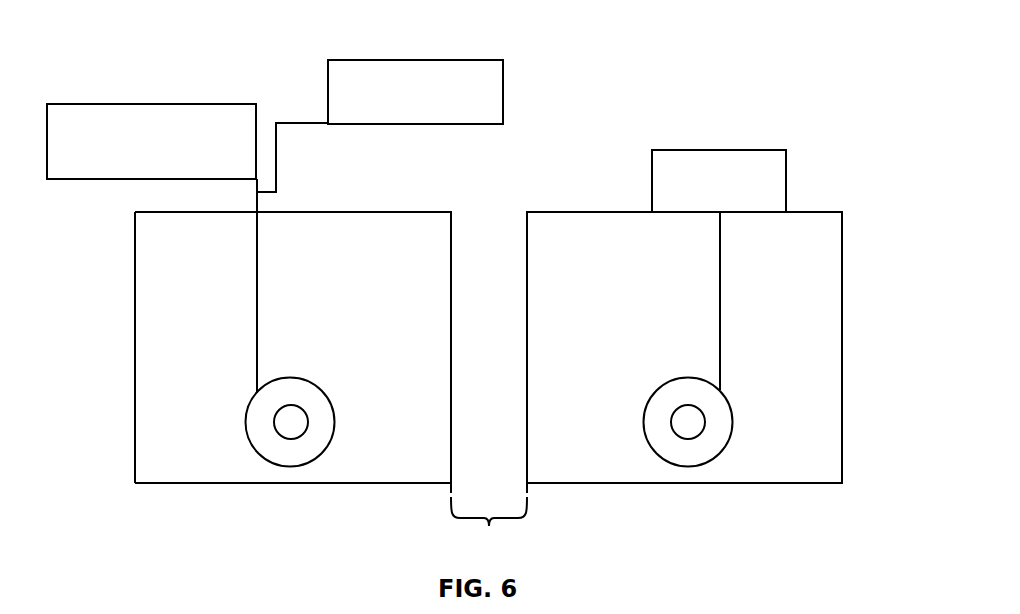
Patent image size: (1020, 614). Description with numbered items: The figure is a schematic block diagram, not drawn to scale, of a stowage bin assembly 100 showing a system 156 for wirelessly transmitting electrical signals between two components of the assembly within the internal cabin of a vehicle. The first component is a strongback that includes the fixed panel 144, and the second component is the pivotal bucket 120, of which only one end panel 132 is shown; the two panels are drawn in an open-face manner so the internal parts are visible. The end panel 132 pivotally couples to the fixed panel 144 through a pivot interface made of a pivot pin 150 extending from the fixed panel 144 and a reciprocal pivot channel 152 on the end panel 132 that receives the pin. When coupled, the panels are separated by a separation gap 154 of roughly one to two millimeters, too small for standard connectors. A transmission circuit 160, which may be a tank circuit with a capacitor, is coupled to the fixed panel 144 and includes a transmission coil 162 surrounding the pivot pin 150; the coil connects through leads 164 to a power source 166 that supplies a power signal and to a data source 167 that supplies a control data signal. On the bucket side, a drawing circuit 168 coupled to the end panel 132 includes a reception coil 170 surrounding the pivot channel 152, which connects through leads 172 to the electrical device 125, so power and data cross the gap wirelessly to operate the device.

The system 100 is at (80, 469).
The bucket 120 is at (843, 240).
The electrical device 125 is at (722, 150).
The end panel 132 is at (843, 333).
The fixed panel 144 is at (387, 212).
The pivot pin 150 is at (302, 408).
The pivot channel 152 is at (705, 410).
The separation gap 154 is at (489, 526).
The system 156 is at (124, 310).
The transmission circuit 160 is at (257, 242).
The transmission coil 162 is at (333, 432).
The leads 164 is at (257, 318).
The power source 166 is at (237, 104).
The data source 167 is at (433, 60).
The drawing circuit 168 is at (721, 280).
The reception coil 170 is at (733, 433).
The leads 172 is at (721, 333).